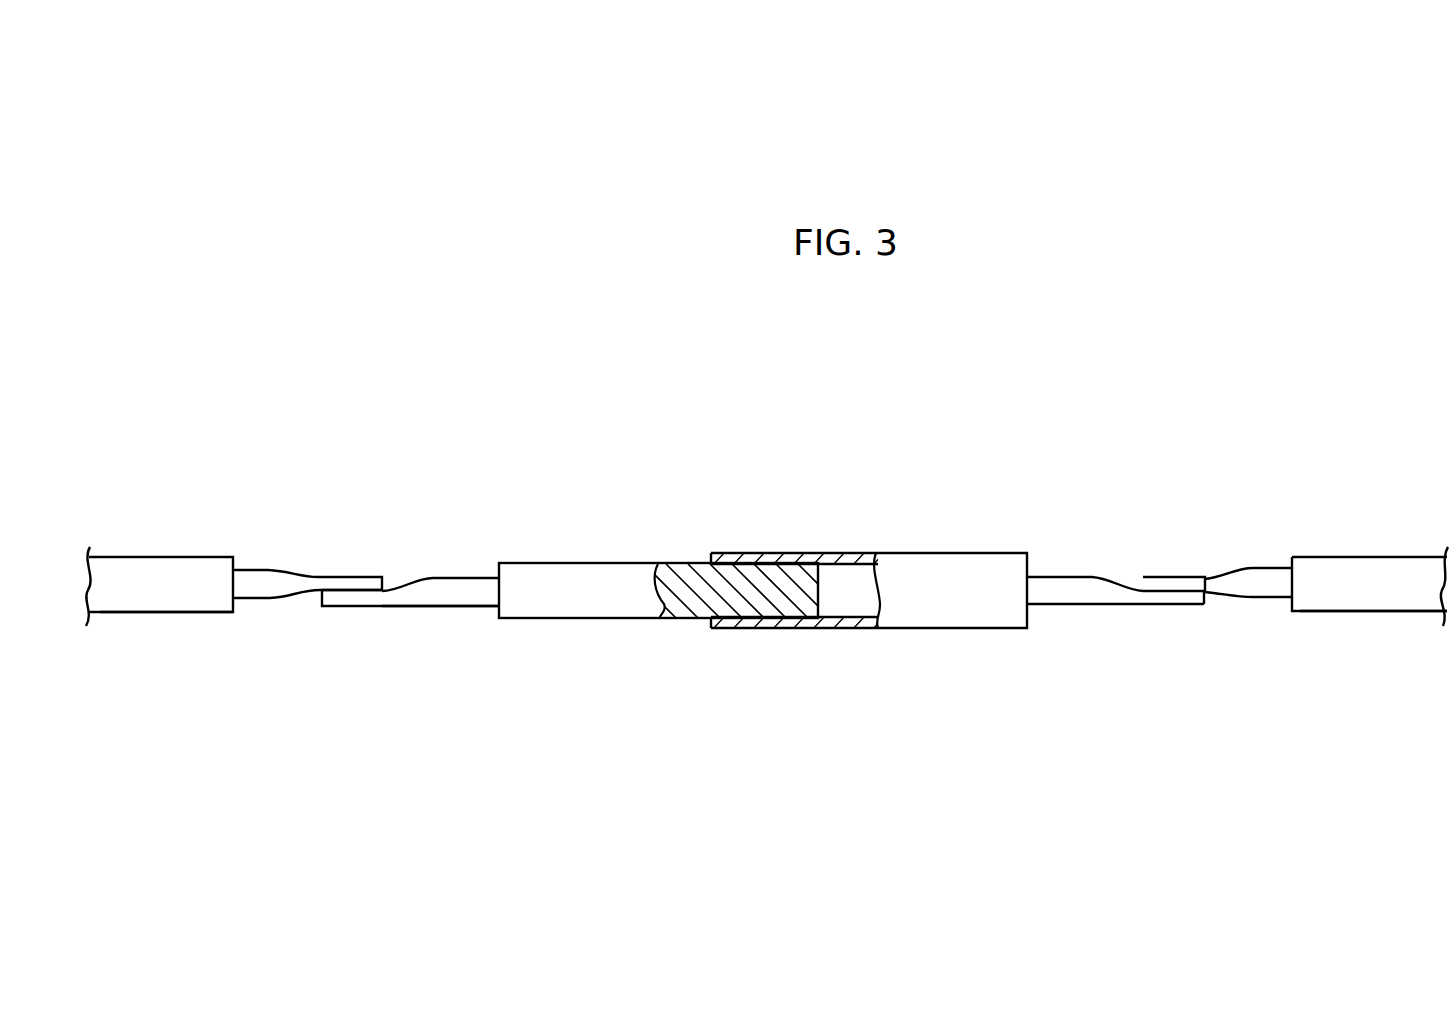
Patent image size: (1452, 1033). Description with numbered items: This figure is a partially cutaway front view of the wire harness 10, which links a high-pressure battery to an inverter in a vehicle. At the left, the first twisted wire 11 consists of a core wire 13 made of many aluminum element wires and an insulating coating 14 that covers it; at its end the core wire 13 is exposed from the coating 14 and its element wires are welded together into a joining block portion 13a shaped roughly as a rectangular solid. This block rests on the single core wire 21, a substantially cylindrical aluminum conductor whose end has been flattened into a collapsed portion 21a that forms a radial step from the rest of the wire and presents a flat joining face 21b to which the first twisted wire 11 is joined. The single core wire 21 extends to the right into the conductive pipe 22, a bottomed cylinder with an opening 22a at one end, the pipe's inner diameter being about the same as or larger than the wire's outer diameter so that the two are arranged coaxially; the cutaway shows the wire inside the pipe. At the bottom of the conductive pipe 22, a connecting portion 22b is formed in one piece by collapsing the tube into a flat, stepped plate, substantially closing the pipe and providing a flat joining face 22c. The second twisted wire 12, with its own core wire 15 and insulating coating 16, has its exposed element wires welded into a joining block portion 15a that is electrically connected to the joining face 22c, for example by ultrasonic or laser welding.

The wire harness 10 is at (283, 313).
The first twisted wire 11 is at (185, 556).
The second twisted wire 12 is at (1390, 557).
The core wire 13 is at (268, 570).
The joining block portion 13a is at (348, 588).
The insulating coating 14 is at (188, 598).
The core wire 15 is at (1275, 568).
The joining block portion 15a is at (1179, 585).
The insulating coating 16 is at (1393, 598).
The single core wire 21 is at (607, 608).
The collapsed portion 21a is at (455, 598).
The joining face 21b is at (326, 589).
The conductive pipe 22 is at (953, 615).
The opening 22a is at (714, 576).
The connecting portion 22b is at (1125, 598).
The joining face 22c is at (1198, 588).